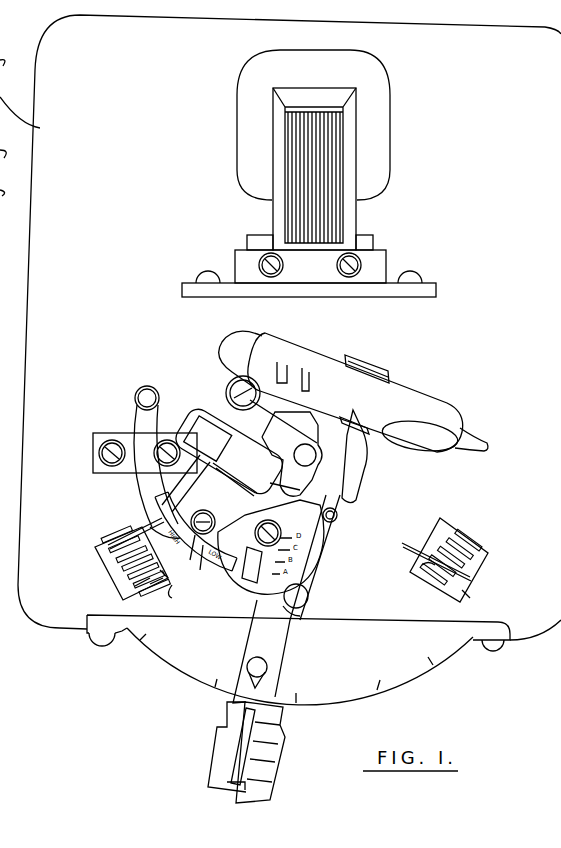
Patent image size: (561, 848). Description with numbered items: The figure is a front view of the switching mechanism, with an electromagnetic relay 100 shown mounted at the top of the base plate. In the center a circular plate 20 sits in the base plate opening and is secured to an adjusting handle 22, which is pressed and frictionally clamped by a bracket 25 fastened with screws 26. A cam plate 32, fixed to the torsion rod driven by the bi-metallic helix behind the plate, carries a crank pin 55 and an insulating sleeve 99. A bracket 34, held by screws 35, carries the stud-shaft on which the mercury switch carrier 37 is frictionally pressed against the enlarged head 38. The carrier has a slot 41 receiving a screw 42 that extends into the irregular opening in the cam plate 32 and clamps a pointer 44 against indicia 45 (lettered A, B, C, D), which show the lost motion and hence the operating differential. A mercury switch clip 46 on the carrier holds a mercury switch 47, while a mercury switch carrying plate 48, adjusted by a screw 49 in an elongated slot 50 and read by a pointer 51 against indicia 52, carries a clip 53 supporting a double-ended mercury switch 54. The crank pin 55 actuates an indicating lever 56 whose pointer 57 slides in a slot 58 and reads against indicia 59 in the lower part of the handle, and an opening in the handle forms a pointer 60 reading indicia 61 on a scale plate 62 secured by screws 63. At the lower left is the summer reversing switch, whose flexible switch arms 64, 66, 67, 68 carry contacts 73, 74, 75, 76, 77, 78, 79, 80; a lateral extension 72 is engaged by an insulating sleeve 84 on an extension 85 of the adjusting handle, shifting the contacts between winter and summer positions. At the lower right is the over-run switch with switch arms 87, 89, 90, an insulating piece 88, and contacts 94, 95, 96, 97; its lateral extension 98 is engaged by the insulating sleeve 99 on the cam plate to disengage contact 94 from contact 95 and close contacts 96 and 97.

The electromagnetic relay 100 is at (402, 143).
The circular plate 20 is at (362, 478).
The adjusting handle 22 is at (280, 641).
The bracket 25 is at (272, 426).
The screws 26 is at (233, 370).
The cam plate 32 is at (333, 530).
The bracket 34 is at (125, 434).
The screws 35 is at (98, 441).
The mercury switch carrier 37 is at (348, 454).
The enlarged head 38 is at (314, 460).
The slot 41 is at (271, 557).
The screw 42 is at (282, 555).
The pointer 44 is at (244, 565).
The indicia 45 is at (300, 540).
The mercury switch clip 46 is at (372, 367).
The mercury switch 47 is at (437, 404).
The mercury switch carrying plate 48 is at (226, 507).
The screw 49 is at (200, 567).
The elongated slot 50 is at (185, 513).
The pointer 51 is at (190, 557).
The indicia 52 is at (205, 535).
The mercury switch clip 53 is at (252, 496).
The mercury switch 54 is at (250, 467).
The crank pin 55 is at (340, 521).
The indicating lever 56 is at (310, 592).
The pointer 57 is at (222, 792).
The slot 58 is at (248, 710).
The indicia 59 is at (272, 758).
The pointer 60 is at (258, 688).
The indicia 61 is at (214, 684).
The scale plate 62 is at (432, 657).
The screws 63 is at (100, 643).
The flexible switch arm 64 is at (120, 545).
The flexible switch arm 66 is at (142, 570).
The flexible switch arm 67 is at (128, 582).
The flexible switch arm 68 is at (172, 599).
The lateral extension 72 is at (155, 542).
The contact 73 is at (124, 544).
The contact 74 is at (131, 554).
The contact 75 is at (116, 534).
The contact 76 is at (137, 562).
The contact 77 is at (148, 579).
The contact 78 is at (162, 575).
The contact 79 is at (135, 588).
The contact 80 is at (152, 588).
The insulating sleeve 84 is at (155, 394).
The extension 85 is at (137, 487).
The switch arm 87 is at (450, 557).
The insulating material 88 is at (442, 566).
The switch arm 89 is at (456, 540).
The switch arm 90 is at (433, 574).
The contact 94 is at (468, 590).
The contact 95 is at (426, 568).
The contact 96 is at (459, 549).
The contact 97 is at (468, 540).
The lateral extension 98 is at (404, 543).
The insulating sleeve 99 is at (300, 606).